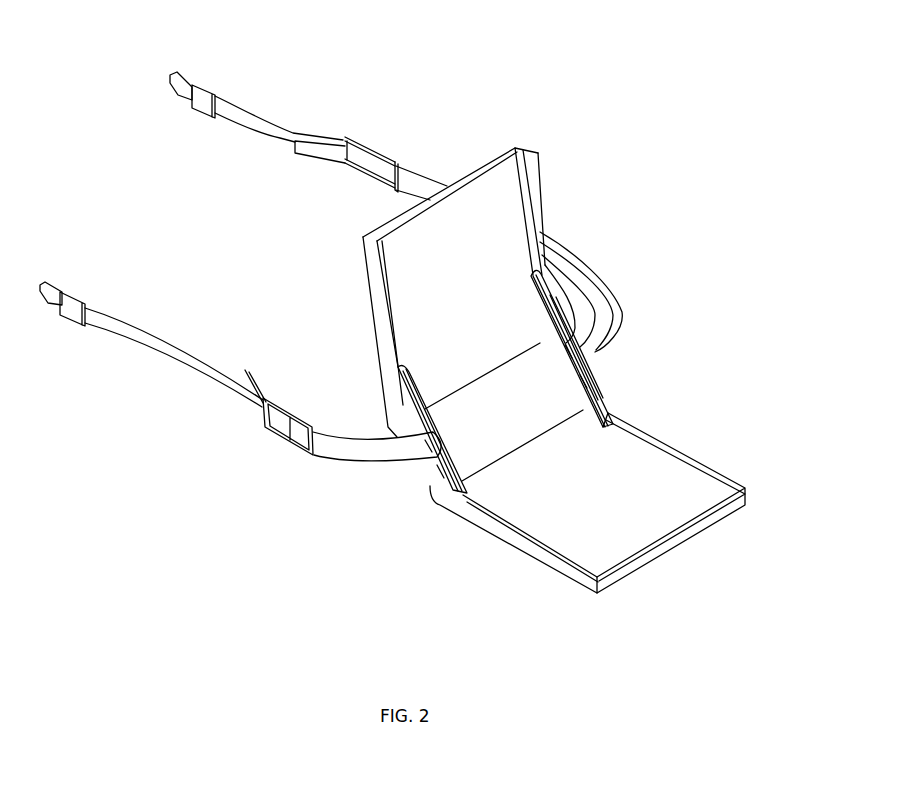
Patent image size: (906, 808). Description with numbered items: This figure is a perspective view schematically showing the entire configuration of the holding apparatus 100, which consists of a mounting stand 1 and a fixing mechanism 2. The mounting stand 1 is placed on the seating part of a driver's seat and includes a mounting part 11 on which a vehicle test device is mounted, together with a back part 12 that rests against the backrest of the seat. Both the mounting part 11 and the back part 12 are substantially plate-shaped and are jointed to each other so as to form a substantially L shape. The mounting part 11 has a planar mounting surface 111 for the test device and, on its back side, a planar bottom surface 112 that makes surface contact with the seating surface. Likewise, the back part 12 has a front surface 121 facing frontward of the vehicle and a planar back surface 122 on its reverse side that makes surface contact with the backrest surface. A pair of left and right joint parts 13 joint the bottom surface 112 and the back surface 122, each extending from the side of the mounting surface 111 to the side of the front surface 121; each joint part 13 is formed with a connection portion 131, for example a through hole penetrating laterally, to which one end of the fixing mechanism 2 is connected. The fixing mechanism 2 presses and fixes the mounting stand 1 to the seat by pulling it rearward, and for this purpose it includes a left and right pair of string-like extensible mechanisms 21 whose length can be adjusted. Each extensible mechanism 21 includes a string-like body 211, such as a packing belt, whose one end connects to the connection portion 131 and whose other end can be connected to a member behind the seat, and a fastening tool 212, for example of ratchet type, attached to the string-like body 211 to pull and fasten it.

The mobile device holder assembly 100 is at (690, 162).
The mounting stand 1 is at (696, 411).
The mounting part 11 is at (710, 463).
The mounting surface 111 is at (675, 517).
The bottom surface 112 is at (633, 537).
The back part 12 is at (537, 190).
The front surface 121 is at (450, 215).
The back surface 122 is at (420, 237).
The joint part 13 is at (603, 397).
The connection portion 131 is at (580, 347).
The fixing mechanism 2 is at (150, 550).
The extensible mechanism 21 is at (347, 60).
The string-like body 211 is at (277, 125).
The fastening tool 212 is at (350, 140).